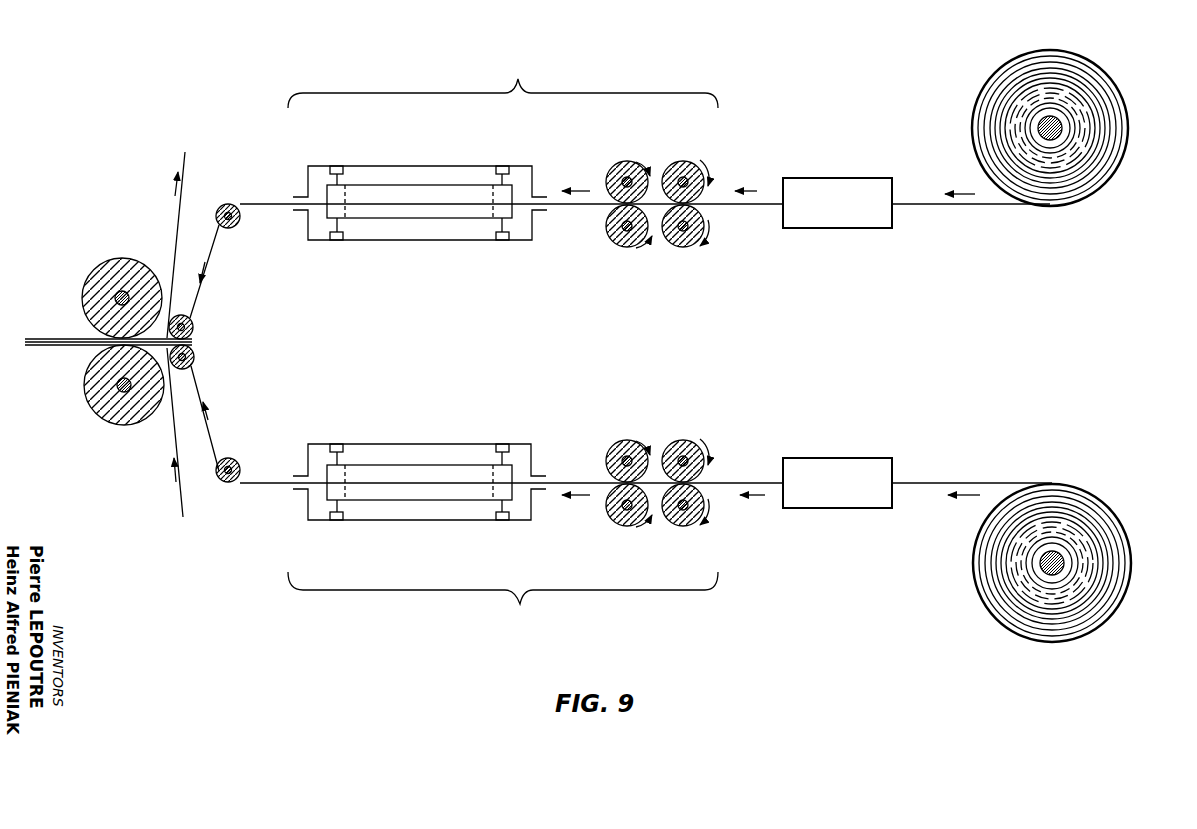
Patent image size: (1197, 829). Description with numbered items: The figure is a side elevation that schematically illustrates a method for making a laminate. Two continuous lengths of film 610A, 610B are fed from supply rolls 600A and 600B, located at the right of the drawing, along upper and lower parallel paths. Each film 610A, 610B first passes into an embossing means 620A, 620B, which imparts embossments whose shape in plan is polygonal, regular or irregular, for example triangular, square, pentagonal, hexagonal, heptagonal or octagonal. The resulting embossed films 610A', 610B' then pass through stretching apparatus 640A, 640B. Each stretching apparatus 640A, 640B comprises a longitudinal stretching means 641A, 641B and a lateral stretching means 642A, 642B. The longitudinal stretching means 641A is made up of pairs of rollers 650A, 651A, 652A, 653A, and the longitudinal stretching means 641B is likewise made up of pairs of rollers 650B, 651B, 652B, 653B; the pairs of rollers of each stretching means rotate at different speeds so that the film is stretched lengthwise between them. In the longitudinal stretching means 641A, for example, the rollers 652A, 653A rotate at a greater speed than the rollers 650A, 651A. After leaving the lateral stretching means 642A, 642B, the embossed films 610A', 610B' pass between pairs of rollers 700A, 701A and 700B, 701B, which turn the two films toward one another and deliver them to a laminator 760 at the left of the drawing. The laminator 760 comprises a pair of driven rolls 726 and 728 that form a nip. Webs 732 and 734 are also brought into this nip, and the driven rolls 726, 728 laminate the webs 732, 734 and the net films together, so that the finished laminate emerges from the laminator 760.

The supply roll 600A is at (1112, 85).
The supply roll 600B is at (1123, 540).
The film 610A is at (971, 175).
The film 610B is at (972, 465).
The embossed film 610A' is at (754, 182).
The embossed film 610B' is at (747, 471).
The embossing means 620A is at (832, 178).
The embossing means 620B is at (828, 508).
The stretching apparatus 640A is at (503, 80).
The stretching apparatus 640B is at (503, 604).
The longitudinal stretching means 641A is at (658, 191).
The longitudinal stretching means 641B is at (658, 470).
The lateral stretching means 642A is at (441, 149).
The lateral stretching means 642B is at (444, 432).
The roller 650A is at (690, 165).
The roller 650B is at (688, 446).
The roller 651A is at (698, 243).
The roller 651B is at (696, 522).
The roller 652A is at (613, 240).
The roller 652B is at (611, 517).
The roller 653A is at (612, 167).
The roller 653B is at (618, 446).
The roller 700A is at (222, 206).
The roller 700B is at (224, 483).
The roller 701A is at (194, 332).
The roller 701B is at (195, 357).
The driven roll 726 is at (138, 249).
The driven roll 728 is at (100, 397).
The web 732 is at (183, 151).
The web 734 is at (190, 520).
The laminator 760 is at (71, 328).